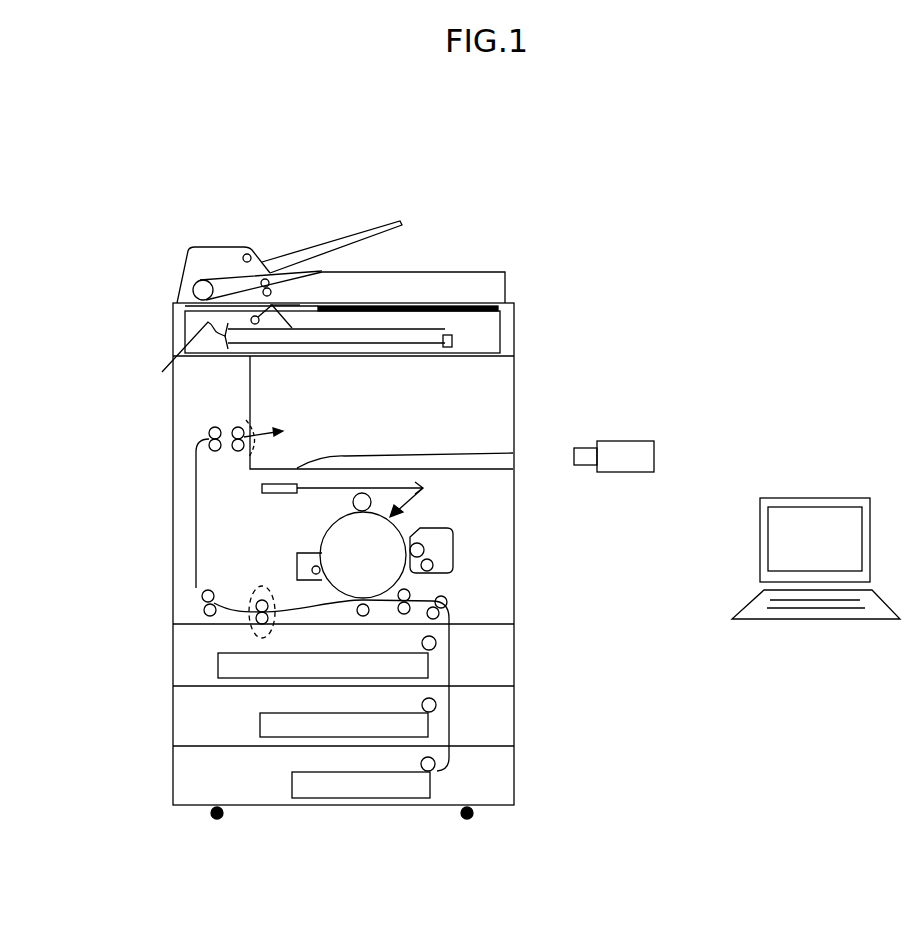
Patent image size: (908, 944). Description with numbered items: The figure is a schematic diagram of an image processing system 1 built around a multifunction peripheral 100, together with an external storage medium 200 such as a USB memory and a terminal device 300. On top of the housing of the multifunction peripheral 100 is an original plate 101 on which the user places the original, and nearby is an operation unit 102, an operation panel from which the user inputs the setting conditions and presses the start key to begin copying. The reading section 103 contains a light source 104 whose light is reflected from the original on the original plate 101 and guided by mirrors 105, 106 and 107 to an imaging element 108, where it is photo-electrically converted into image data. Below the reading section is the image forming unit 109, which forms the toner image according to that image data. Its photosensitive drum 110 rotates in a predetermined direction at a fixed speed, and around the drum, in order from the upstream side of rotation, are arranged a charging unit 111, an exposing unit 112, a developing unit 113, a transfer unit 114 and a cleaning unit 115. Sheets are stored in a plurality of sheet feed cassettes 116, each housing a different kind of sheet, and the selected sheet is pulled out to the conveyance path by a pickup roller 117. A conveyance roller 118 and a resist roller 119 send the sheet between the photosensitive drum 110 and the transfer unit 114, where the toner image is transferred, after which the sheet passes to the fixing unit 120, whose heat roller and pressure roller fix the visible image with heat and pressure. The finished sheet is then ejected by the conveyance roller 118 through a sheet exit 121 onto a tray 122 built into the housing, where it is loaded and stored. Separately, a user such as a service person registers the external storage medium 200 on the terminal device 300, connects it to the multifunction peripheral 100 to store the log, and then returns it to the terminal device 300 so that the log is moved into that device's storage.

The image processing system 1 is at (693, 310).
The multifunction peripheral 100 is at (343, 224).
The original plate 101 is at (413, 302).
The operation unit 102 is at (477, 303).
The image reading unit 103 is at (165, 355).
The light source 104 is at (289, 310).
The mirror 105 is at (285, 328).
The mirror 106 is at (173, 355).
The mirror 107 is at (226, 330).
The imaging element 108 is at (454, 333).
The image forming unit 109 is at (163, 613).
The photosensitive drum 110 is at (333, 540).
The charging unit 111 is at (353, 502).
The exposing unit 112 is at (260, 492).
The developing unit 113 is at (458, 575).
The transfer unit 114 is at (359, 609).
The cleaning unit 115 is at (297, 560).
The sheet feed cassette 116 is at (218, 670).
The pickup roller 117 is at (436, 643).
The conveyance roller 118 is at (202, 595).
The resist roller 119 is at (402, 614).
The fixing unit 120 is at (250, 620).
The sheet exit 121 is at (248, 421).
The tray 122 is at (330, 460).
The external storage medium 200 is at (623, 450).
The terminal device 300 is at (842, 497).